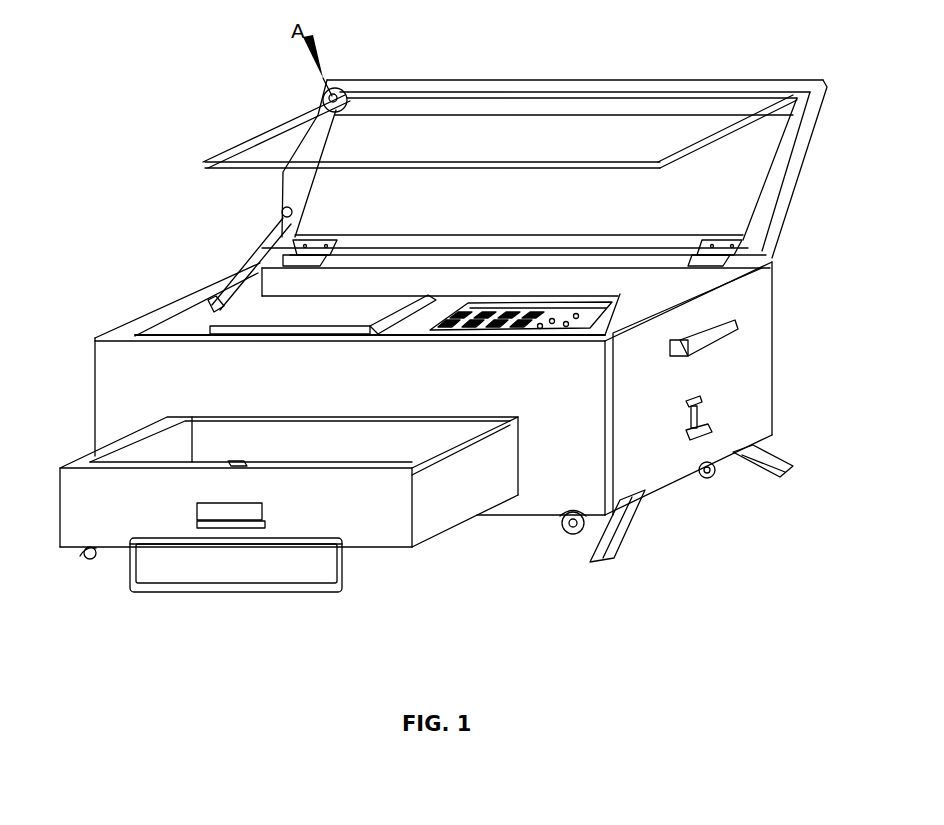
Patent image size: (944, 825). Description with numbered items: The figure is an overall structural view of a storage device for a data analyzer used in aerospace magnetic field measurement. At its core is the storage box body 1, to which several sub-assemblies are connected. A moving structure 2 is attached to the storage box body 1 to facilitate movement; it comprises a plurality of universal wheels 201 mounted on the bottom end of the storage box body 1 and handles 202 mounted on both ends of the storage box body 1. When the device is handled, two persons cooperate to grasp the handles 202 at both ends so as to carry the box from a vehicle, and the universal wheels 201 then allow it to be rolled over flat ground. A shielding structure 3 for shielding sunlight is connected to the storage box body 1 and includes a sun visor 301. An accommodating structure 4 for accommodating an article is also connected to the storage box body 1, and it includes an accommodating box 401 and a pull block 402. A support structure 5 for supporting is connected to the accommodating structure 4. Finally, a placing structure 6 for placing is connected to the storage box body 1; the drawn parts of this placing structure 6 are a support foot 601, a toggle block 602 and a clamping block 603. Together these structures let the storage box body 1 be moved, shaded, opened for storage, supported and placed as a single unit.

The storage box body 1 is at (113, 381).
The moving structure 2 is at (722, 467).
The shielding structure 3 is at (277, 138).
The sun visor 301 is at (645, 127).
The accommodating structure 4 is at (236, 461).
The accommodating box 401 is at (365, 548).
The pull block 402 is at (200, 510).
The support structure 5 is at (203, 590).
The placing structure 6 is at (622, 530).
The support foot 601 is at (782, 463).
The toggle block 602 is at (694, 442).
The clamping block 603 is at (700, 400).
The universal wheel 201 is at (566, 531).
The handle 202 is at (737, 330).